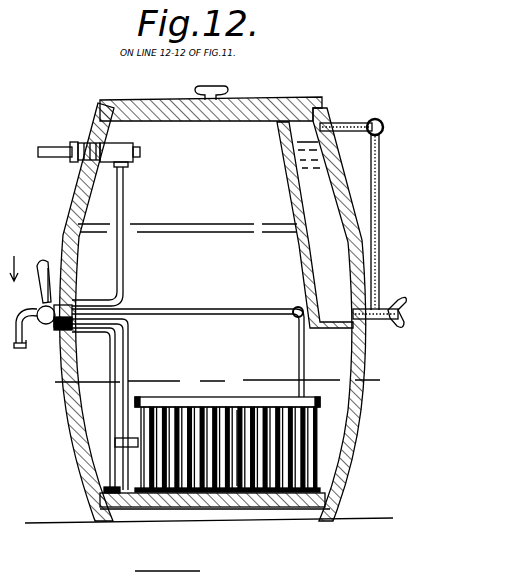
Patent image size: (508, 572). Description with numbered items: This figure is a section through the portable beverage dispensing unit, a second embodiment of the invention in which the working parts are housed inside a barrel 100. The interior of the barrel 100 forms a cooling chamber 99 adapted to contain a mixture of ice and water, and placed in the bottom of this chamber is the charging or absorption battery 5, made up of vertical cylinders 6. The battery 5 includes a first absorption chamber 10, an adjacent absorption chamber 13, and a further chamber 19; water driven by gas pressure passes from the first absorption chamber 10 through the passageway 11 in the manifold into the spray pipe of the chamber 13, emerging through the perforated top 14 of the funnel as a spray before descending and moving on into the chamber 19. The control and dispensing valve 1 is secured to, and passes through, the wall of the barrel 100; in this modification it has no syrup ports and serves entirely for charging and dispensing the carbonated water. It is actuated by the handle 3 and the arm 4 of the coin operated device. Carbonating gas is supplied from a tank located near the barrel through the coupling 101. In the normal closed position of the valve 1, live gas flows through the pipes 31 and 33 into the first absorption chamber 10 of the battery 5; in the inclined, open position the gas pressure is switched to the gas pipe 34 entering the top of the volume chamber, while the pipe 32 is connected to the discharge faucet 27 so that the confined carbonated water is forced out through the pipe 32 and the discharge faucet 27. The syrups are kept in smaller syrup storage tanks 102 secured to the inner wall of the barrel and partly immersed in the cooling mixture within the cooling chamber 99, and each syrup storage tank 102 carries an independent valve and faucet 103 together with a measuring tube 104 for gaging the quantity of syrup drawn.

The control and dispensing valve 1 is at (30, 345).
The handle 3 is at (22, 250).
The arm 4 is at (42, 265).
The battery of charging chambers 5 is at (227, 389).
The vertical cylinders 6 is at (213, 407).
The first absorption chamber 10 is at (297, 474).
The passageway 11 is at (227, 459).
The absorption chamber 13 is at (264, 477).
The perforated top 14 is at (215, 386).
The chamber 19 is at (237, 477).
The discharge faucet 27 is at (24, 334).
The pipe 31 is at (124, 270).
The pipe 32 is at (112, 381).
The pipe 33 is at (234, 308).
The gas pipe 34 is at (130, 348).
The cooling chamber 99 is at (187, 212).
The barrel 100 is at (77, 217).
The coupling 101 is at (84, 145).
The syrup storage tanks 102 is at (311, 194).
The valve and faucet 103 is at (393, 322).
The measuring tube 104 is at (373, 246).